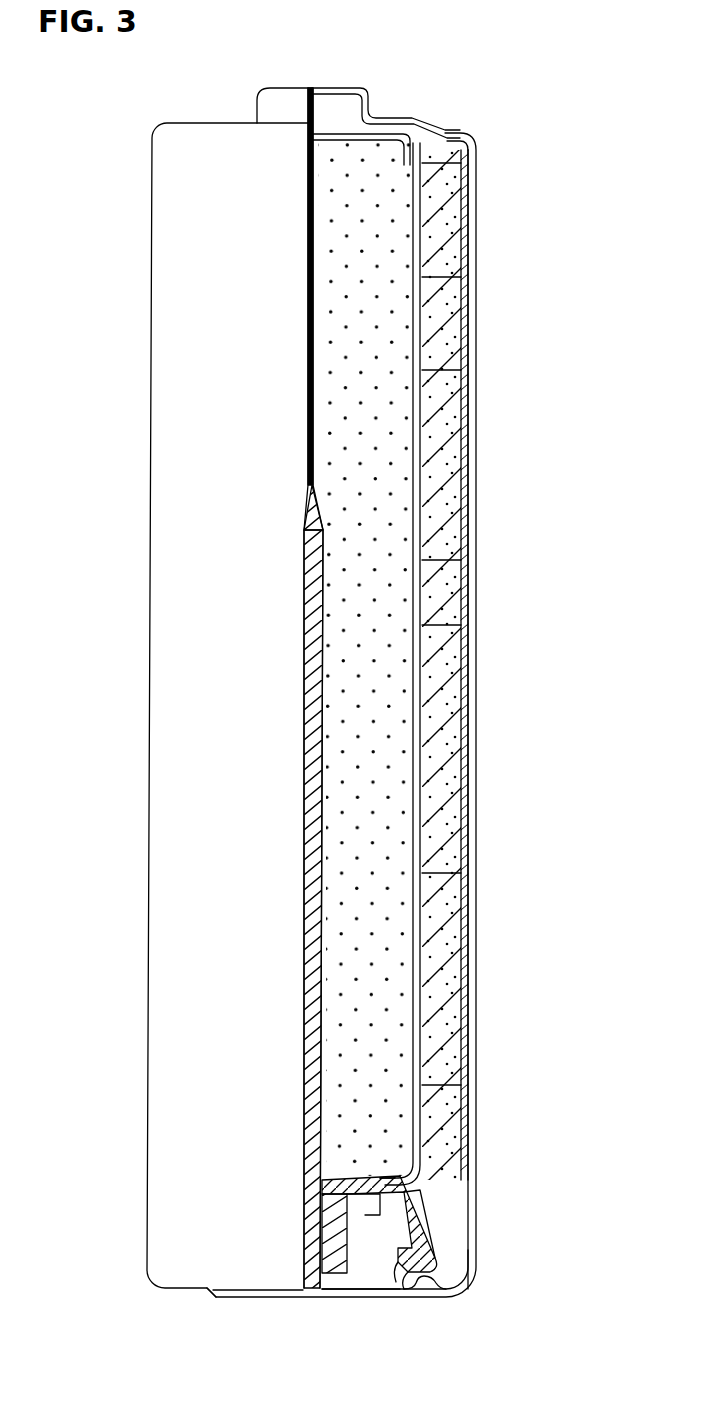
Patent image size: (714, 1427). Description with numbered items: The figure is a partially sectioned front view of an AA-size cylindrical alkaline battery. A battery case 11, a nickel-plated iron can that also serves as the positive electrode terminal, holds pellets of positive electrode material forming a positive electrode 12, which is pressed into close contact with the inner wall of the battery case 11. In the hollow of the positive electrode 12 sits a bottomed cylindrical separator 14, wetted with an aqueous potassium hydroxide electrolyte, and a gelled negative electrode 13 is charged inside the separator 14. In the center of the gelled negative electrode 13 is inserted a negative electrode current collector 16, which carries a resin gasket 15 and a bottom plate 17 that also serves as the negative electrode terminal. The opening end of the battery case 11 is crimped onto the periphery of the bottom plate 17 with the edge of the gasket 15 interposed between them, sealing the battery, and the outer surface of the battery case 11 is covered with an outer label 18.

The battery case 11 is at (472, 663).
The positive electrode 12 is at (472, 335).
The gelled negative electrode 13 is at (390, 808).
The separator 14 is at (470, 552).
The gasket 15 is at (356, 1180).
The negative electrode current collector 16 is at (325, 1022).
The bottom plate 17 is at (322, 1298).
The outer label 18 is at (465, 1225).